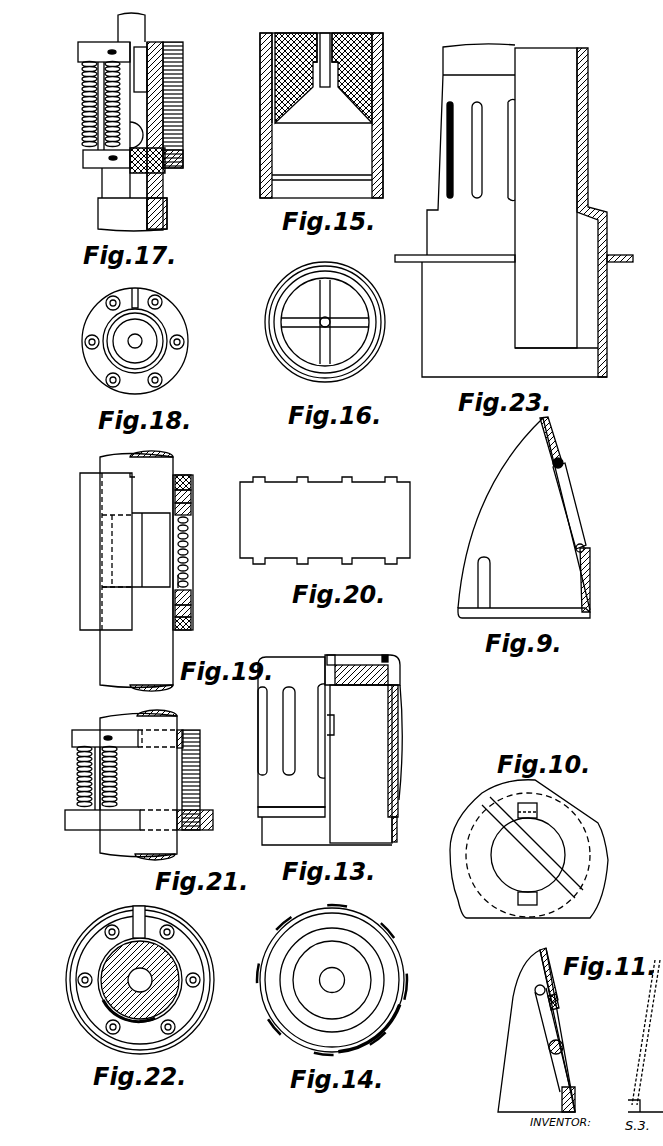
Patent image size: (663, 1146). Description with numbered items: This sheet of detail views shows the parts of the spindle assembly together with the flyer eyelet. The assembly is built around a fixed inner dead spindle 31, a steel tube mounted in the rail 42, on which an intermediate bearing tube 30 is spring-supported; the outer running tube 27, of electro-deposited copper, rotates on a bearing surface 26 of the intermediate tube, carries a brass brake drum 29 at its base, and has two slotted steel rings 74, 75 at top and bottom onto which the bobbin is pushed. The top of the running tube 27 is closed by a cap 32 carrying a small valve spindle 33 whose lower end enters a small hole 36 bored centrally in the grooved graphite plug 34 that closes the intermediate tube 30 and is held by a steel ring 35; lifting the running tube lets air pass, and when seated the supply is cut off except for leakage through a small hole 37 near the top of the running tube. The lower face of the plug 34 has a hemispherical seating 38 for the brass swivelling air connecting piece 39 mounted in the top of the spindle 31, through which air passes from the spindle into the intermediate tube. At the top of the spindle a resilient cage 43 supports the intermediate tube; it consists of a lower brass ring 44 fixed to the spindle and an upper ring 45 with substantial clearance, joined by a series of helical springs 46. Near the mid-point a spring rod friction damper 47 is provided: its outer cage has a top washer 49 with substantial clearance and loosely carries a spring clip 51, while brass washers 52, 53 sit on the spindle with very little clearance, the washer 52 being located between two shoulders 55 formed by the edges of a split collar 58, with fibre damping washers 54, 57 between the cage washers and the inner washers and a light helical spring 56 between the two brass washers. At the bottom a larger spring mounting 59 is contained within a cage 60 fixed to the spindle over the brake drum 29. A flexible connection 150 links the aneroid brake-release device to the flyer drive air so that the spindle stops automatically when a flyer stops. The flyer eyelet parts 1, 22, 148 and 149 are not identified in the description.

In FIG. 9, the casing 1 is at (563, 458).
In FIG. 10, the casing 1 is at (598, 850).
In FIG. 11, the casing 1 is at (545, 962).
In FIG. 9, the hatched link 22 is at (557, 437).
In FIG. 15, the bearing surface 26 is at (383, 142).
In FIG. 16, the bearing surface 26 is at (277, 302).
In FIG. 23, the outer running tube 27 is at (455, 60).
In FIG. 13, the outer running tube 27 is at (392, 835).
In FIG. 23, the brake drum 29 is at (437, 288).
In FIG. 15, the intermediate bearing tube 30 is at (382, 85).
In FIG. 16, the intermediate bearing tube 30 is at (370, 288).
In FIG. 17, the inner dead spindle 31 is at (110, 208).
In FIG. 18, the inner dead spindle 31 is at (155, 325).
In FIG. 19, the inner dead spindle 31 is at (112, 657).
In FIG. 21, the inner dead spindle 31 is at (165, 838).
In FIG. 22, the inner dead spindle 31 is at (150, 958).
In FIG. 13, the cap 32 is at (370, 660).
In FIG. 14, the cap 32 is at (333, 945).
In FIG. 13, the valve spindle 33 is at (333, 658).
In FIG. 14, the valve spindle 33 is at (330, 978).
In FIG. 15, the grooved graphite plug 34 is at (352, 65).
In FIG. 16, the grooved graphite plug 34 is at (303, 293).
In FIG. 15, the steel ring 35 is at (320, 50).
In FIG. 16, the steel ring 35 is at (370, 338).
In FIG. 15, the small hole 36 is at (318, 62).
In FIG. 16, the small hole 36 is at (327, 318).
In FIG. 13, the small hole 37 is at (395, 685).
In FIG. 15, the hemispherical seating 38 is at (330, 92).
In FIG. 17, the brass swivelling air connecting piece 39 is at (138, 80).
In FIG. 18, the brass swivelling air connecting piece 39 is at (145, 340).
In FIG. 19, the rail 42 is at (193, 540).
In FIG. 17, the resilient cage 43 is at (170, 153).
In FIG. 17, the lower brass ring 44 is at (98, 155).
In FIG. 21, the lower brass ring 44 is at (83, 822).
In FIG. 21, the upper ring 45 is at (92, 740).
In FIG. 17, the helical springs 46 is at (95, 53).
In FIG. 18, the helical springs 46 is at (96, 312).
In FIG. 21, the helical springs 46 is at (108, 758).
In FIG. 22, the helical springs 46 is at (150, 913).
In FIG. 19, the spring rod friction damper 47 is at (183, 583).
In FIG. 19, the top washer 49 is at (183, 473).
In FIG. 19, the spring clip 51 is at (80, 532).
In FIG. 20, the spring clip 51 is at (312, 495).
In FIG. 19, the brass washer 52 is at (183, 505).
In FIG. 19, the brass washer 53 is at (183, 600).
In FIG. 19, the fibre damping washer 54 is at (183, 610).
In FIG. 19, the shoulders 55 is at (112, 523).
In FIG. 19, the light helical spring 56 is at (180, 530).
In FIG. 19, the fibre damping washer 57 is at (180, 493).
In FIG. 19, the split collar 58 is at (168, 543).
In FIG. 21, the spring mounting 59 is at (202, 810).
In FIG. 19, the cage 60 is at (190, 625).
In FIG. 13, the slotted steel ring 74 is at (398, 792).
In FIG. 14, the slotted steel ring 74 is at (403, 990).
In FIG. 23, the slotted steel ring 75 is at (453, 102).
In FIG. 9, the rod 148 is at (565, 485).
In FIG. 10, the rod 148 is at (497, 843).
In FIG. 11, the rod 148 is at (563, 1030).
In FIG. 9, the bar 149 is at (585, 615).
In FIG. 10, the flexible connection 150 is at (527, 853).
In FIG. 11, the flexible connection 150 is at (562, 1047).